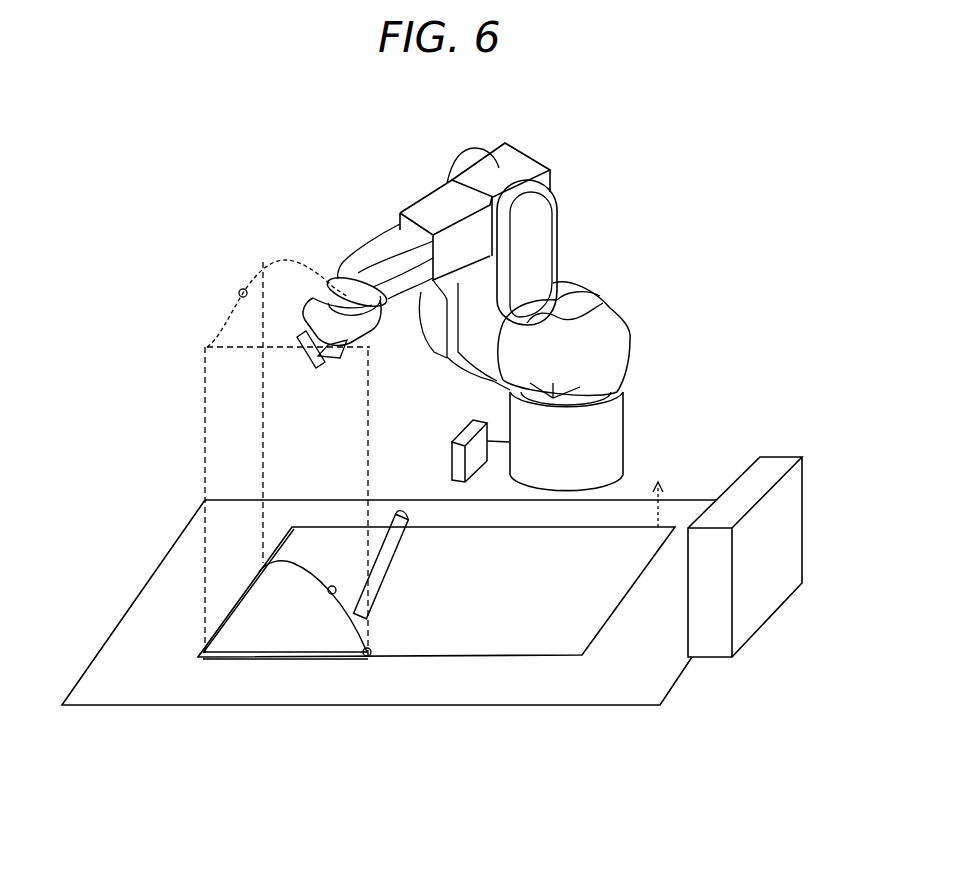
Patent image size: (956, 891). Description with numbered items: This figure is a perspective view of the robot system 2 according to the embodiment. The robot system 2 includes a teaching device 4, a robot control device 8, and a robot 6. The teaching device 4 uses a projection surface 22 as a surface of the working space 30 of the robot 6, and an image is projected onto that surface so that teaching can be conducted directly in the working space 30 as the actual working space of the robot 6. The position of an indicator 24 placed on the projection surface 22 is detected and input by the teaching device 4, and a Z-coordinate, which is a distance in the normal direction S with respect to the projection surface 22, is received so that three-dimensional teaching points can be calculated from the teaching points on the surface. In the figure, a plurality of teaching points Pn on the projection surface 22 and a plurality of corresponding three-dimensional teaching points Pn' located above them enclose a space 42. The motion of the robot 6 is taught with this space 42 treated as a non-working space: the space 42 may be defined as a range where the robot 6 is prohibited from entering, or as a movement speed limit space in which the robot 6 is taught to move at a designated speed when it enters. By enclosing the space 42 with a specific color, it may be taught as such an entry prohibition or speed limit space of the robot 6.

The robot system 2 is at (694, 206).
The teaching device 4 is at (780, 455).
The robot 6 is at (424, 162).
The robot control device 8 is at (456, 442).
The projection surface 22 is at (289, 536).
The indicator 24 is at (400, 516).
The working space 30 is at (440, 625).
The space 42 is at (243, 622).
The teaching points Pn is at (345, 672).
The three-dimensional teaching points Pn' is at (210, 312).
The normal direction S is at (647, 500).